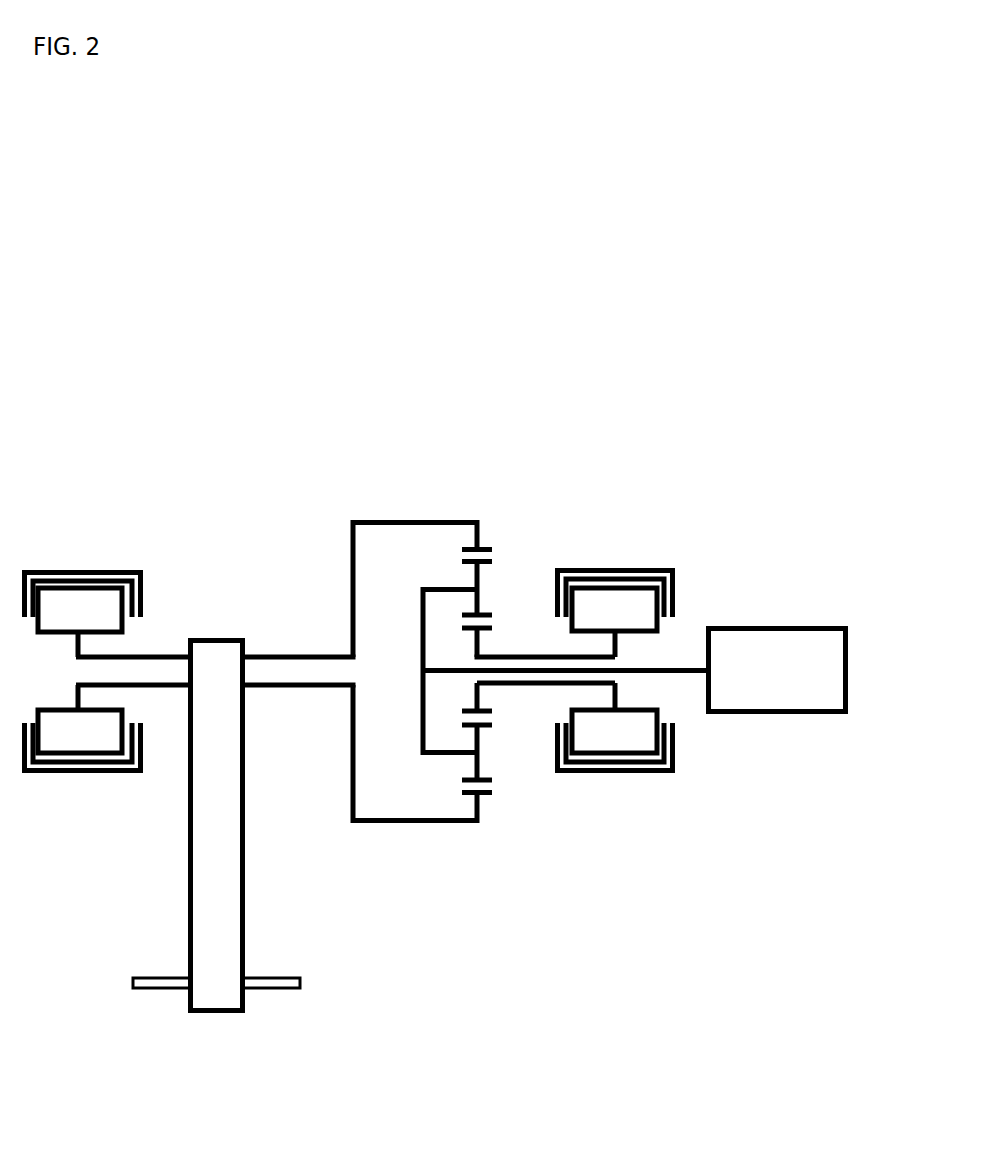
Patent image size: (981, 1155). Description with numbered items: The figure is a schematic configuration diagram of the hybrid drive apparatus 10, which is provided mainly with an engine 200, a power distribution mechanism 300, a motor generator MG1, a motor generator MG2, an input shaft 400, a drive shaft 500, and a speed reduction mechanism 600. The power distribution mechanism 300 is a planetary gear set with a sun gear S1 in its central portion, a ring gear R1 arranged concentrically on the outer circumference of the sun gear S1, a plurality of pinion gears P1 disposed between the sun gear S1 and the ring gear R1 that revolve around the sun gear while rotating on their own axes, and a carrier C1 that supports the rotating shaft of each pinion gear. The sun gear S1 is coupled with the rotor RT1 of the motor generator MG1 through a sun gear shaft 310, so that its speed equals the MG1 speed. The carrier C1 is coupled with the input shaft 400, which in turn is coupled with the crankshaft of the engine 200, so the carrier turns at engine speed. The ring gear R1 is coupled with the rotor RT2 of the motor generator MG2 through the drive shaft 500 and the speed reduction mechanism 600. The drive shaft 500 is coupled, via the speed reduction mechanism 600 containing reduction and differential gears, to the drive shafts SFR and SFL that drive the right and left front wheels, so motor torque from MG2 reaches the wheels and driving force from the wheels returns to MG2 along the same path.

The hybrid drive apparatus 10 is at (223, 310).
The power distribution mechanism 300 is at (421, 490).
The engine 200 is at (752, 627).
The input shaft 400 is at (688, 673).
The drive shaft 500 is at (293, 687).
The speed reduction mechanism 600 is at (188, 833).
The sun gear shaft 310 is at (528, 653).
The ring gear R1 is at (466, 519).
The pinion gear P1 is at (481, 572).
The carrier C1 is at (421, 597).
The sun gear S1 is at (458, 628).
The motor generator MG1 is at (618, 553).
The motor generator MG2 is at (83, 553).
The rotor RT1 is at (614, 670).
The rotor RT2 is at (80, 670).
The drive shaft SFL is at (134, 990).
The drive shaft SFR is at (299, 990).